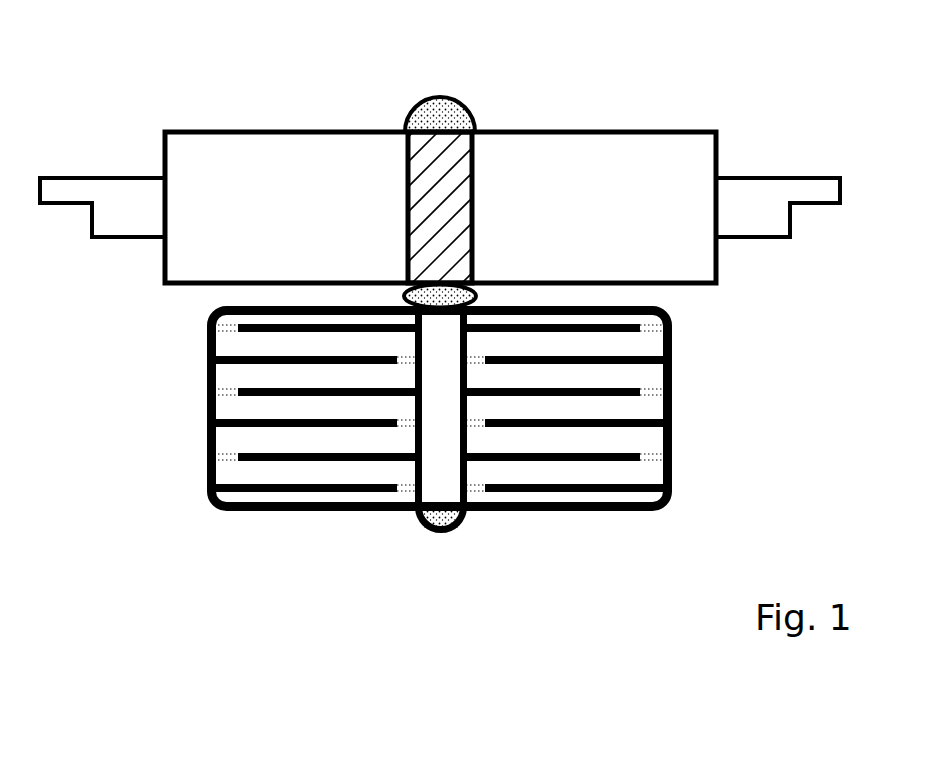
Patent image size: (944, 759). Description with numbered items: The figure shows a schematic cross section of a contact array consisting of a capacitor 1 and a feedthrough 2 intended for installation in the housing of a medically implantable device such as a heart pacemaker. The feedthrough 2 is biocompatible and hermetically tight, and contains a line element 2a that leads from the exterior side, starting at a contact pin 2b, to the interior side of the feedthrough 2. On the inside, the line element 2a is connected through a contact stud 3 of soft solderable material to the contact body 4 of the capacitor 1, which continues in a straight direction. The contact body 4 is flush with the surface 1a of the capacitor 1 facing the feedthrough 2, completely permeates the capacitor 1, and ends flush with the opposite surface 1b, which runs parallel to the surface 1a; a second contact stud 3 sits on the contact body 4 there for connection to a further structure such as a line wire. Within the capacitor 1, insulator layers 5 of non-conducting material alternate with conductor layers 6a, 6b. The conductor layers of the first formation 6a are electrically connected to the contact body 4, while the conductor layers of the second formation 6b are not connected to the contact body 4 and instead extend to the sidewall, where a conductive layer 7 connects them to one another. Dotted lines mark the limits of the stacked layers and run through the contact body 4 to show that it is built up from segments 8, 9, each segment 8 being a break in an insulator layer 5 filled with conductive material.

The capacitor 1 is at (162, 510).
The surface 1a is at (518, 300).
The opposite surface 1b is at (313, 517).
The feedthrough 2 is at (252, 175).
The line element 2a is at (412, 172).
The contact pin 2b is at (440, 115).
The contact stud 3 is at (393, 295).
The contact body 4 is at (453, 412).
The insulator layers 5 is at (572, 440).
The conductor layers of the first formation 6a is at (632, 382).
The conductor layers of the second formation 6b is at (637, 482).
The conductive layer 7 is at (207, 407).
The segment 8 is at (432, 470).
The segment 9 is at (448, 457).